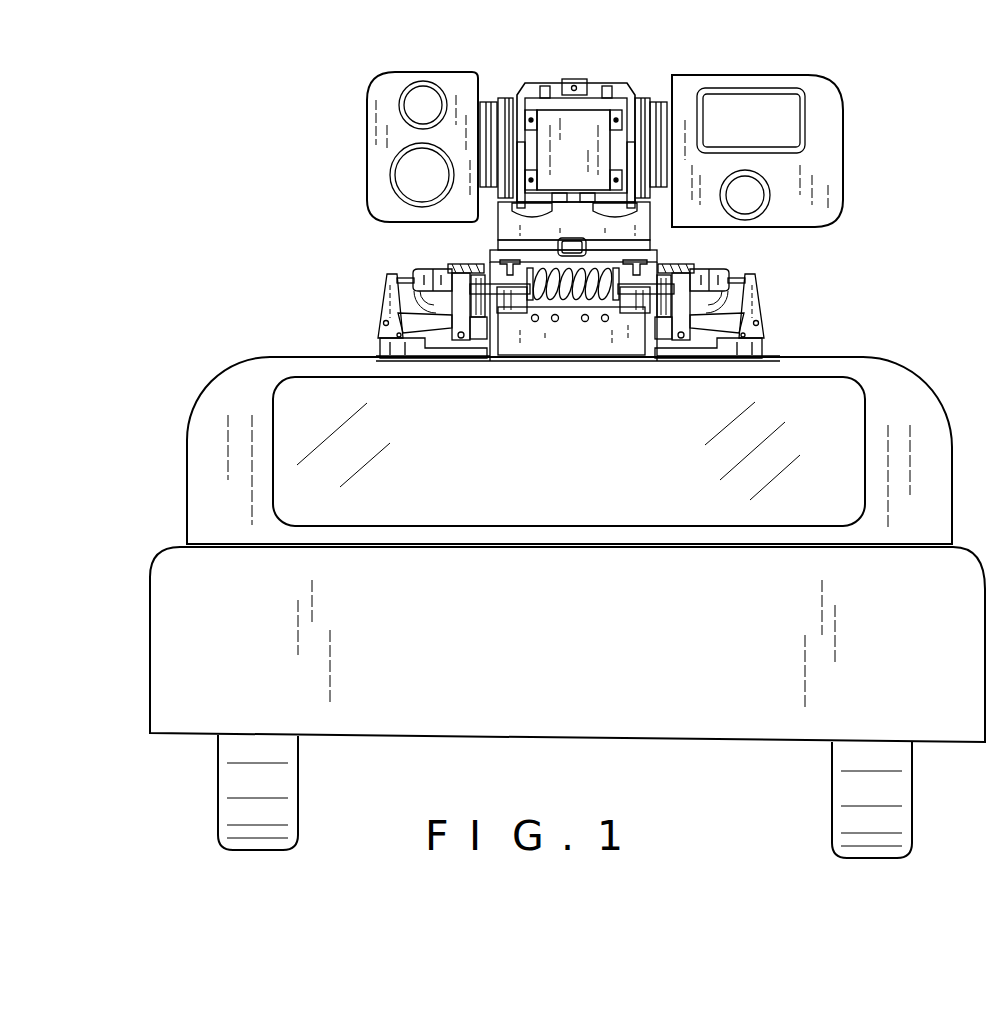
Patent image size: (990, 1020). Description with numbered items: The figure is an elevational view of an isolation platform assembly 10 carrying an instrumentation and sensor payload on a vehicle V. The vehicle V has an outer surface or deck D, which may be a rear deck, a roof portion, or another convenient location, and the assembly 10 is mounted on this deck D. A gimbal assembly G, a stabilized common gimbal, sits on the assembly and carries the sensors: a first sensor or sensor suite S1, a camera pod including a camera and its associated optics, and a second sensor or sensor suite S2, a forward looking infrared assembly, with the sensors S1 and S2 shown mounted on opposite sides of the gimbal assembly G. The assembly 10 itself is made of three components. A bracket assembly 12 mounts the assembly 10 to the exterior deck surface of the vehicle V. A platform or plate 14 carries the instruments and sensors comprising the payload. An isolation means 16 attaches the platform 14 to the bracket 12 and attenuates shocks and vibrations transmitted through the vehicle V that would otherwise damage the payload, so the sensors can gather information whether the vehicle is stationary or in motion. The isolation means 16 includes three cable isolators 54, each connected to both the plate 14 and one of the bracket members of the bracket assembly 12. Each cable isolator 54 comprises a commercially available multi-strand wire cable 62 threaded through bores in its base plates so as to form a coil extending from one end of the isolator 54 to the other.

The vehicle V is at (563, 611).
The deck D is at (846, 354).
The first sensor S1 is at (443, 72).
The second sensor S2 is at (771, 75).
The gimbal assembly G is at (580, 164).
The assembly 10 is at (545, 327).
The bracket assembly 12 is at (582, 348).
The platform 14 is at (547, 292).
The isolation means 16 is at (326, 259).
The cable isolator 54 is at (453, 261).
The multi-strand wire cable 62 is at (440, 268).